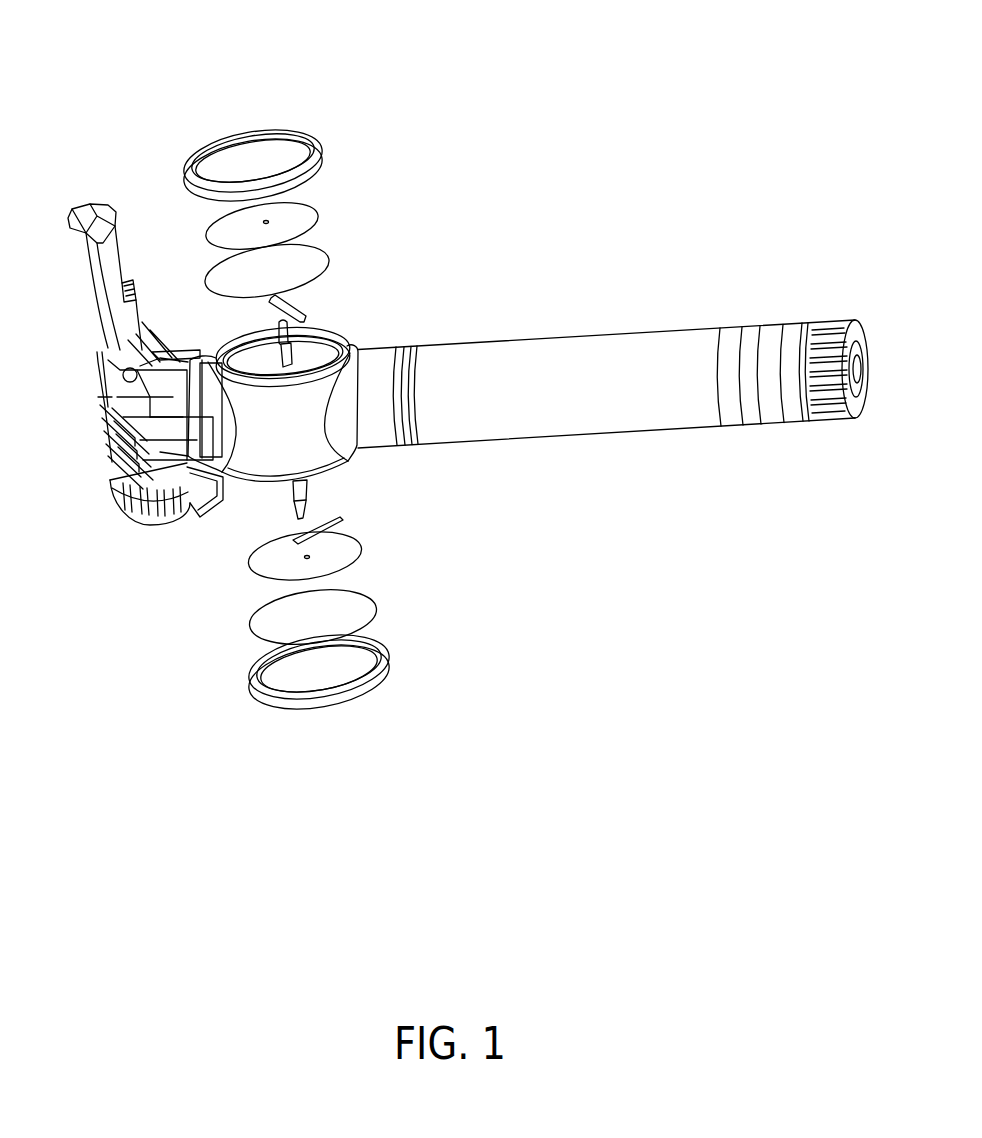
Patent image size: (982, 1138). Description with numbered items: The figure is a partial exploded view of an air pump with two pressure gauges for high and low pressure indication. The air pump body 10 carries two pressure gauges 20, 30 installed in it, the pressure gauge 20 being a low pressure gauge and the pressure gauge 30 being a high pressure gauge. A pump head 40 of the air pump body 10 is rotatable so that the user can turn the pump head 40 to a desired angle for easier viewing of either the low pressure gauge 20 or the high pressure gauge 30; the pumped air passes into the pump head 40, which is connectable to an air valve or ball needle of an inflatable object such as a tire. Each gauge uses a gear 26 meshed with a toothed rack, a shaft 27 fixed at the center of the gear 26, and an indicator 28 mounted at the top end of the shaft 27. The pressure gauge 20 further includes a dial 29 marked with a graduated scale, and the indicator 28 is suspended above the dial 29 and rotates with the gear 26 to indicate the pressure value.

The air pump body 10 is at (617, 272).
The pressure gauge 20 is at (267, 86).
The gear 26 is at (348, 351).
The shaft 27 is at (338, 336).
The indicator 28 is at (308, 308).
The dial 29 is at (302, 221).
The pressure gauge 30 is at (348, 737).
The pump head 40 is at (103, 446).